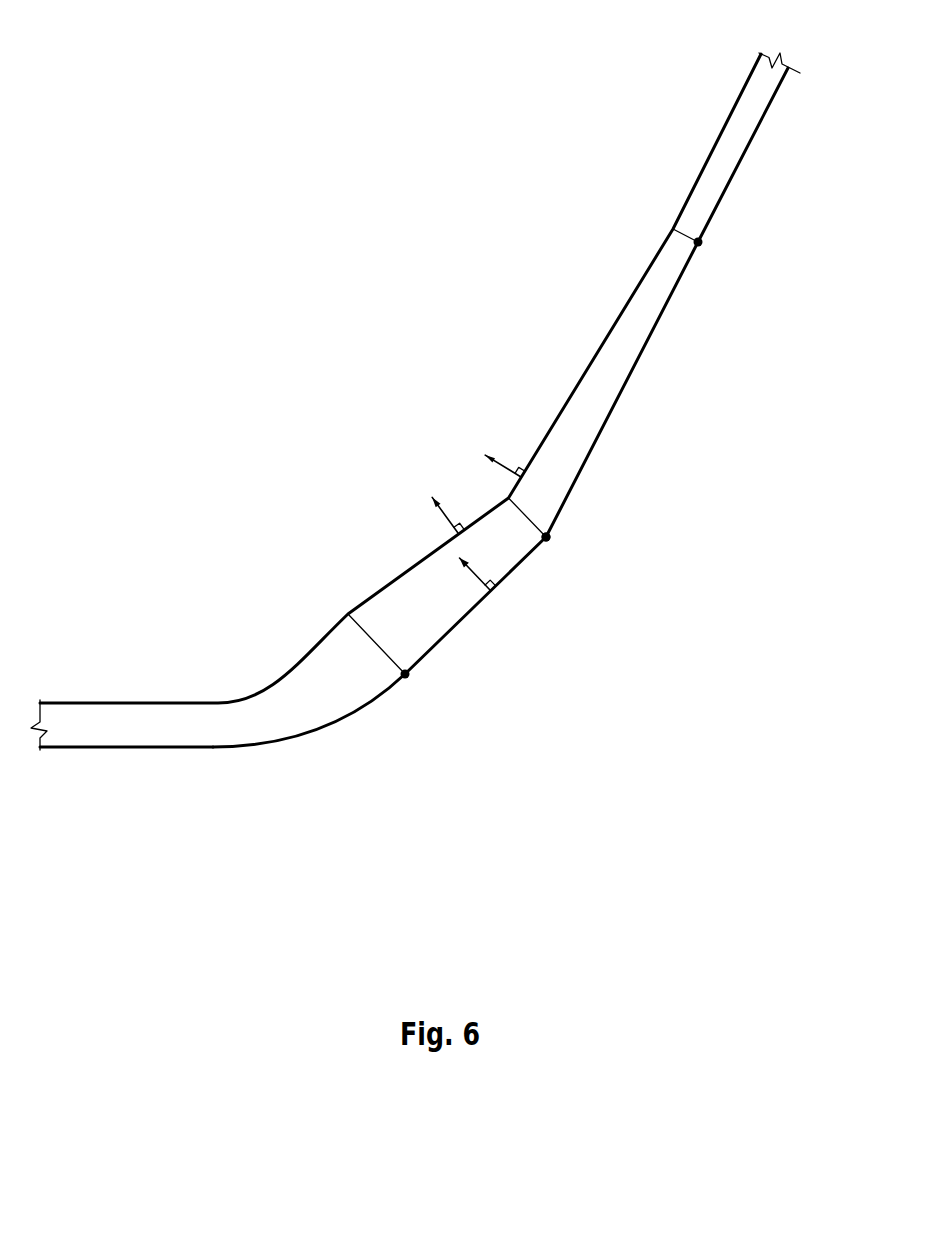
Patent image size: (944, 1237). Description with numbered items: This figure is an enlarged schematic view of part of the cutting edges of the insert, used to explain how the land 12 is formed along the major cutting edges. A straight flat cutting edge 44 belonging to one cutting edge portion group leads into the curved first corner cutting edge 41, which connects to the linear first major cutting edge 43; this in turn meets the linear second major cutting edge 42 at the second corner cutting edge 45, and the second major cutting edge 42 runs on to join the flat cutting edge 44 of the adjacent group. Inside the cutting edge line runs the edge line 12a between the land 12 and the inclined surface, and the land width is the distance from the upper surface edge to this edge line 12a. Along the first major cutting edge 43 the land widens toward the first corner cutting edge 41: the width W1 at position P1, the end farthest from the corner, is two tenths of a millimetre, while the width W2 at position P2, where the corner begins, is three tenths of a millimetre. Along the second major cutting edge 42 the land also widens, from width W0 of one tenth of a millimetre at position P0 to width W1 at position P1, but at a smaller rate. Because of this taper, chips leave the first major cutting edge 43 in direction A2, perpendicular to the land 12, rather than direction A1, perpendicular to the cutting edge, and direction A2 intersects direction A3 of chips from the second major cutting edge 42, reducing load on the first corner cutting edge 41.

The land 12 is at (442, 466).
The edge line 12a is at (368, 597).
The first corner cutting edge 41 is at (330, 718).
The second major cutting edge 42 is at (653, 332).
The first major cutting edge 43 is at (470, 613).
The flat cutting edge 44 is at (728, 185).
The second corner cutting edge 45 is at (549, 538).
The position P0 is at (702, 244).
The position P1 is at (547, 542).
The position P2 is at (407, 677).
The width W0 is at (672, 230).
The width W1 is at (530, 518).
The width W2 is at (378, 648).
The arrow A1 is at (484, 560).
The arrow A2 is at (455, 500).
The arrow A3 is at (504, 448).